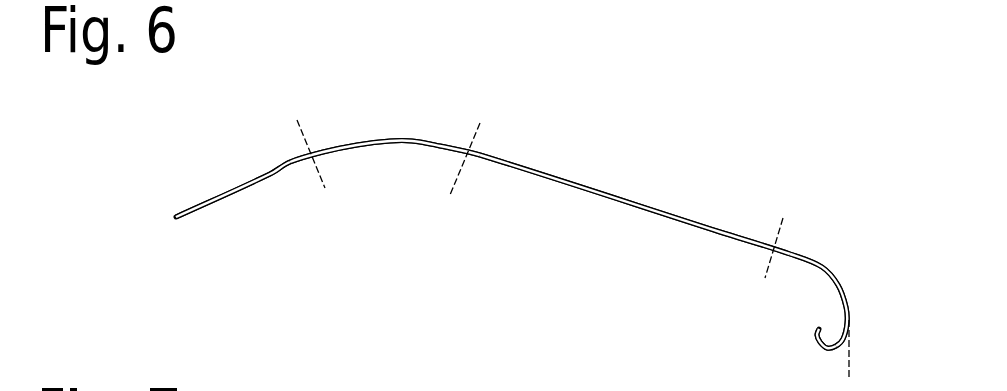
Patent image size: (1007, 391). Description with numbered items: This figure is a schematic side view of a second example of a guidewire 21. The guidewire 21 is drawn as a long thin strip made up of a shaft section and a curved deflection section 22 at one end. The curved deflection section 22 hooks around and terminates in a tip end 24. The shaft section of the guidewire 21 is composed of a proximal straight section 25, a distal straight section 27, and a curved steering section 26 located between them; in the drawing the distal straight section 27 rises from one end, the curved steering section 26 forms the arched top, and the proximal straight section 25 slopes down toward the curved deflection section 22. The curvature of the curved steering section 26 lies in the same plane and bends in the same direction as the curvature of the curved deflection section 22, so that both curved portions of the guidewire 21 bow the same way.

The guidewire 21 is at (255, 127).
The curved deflection section 22 is at (841, 259).
The tip end 24 is at (817, 333).
The proximal straight section 25 is at (586, 194).
The curved steering section 26 is at (400, 139).
The distal straight section 27 is at (242, 190).